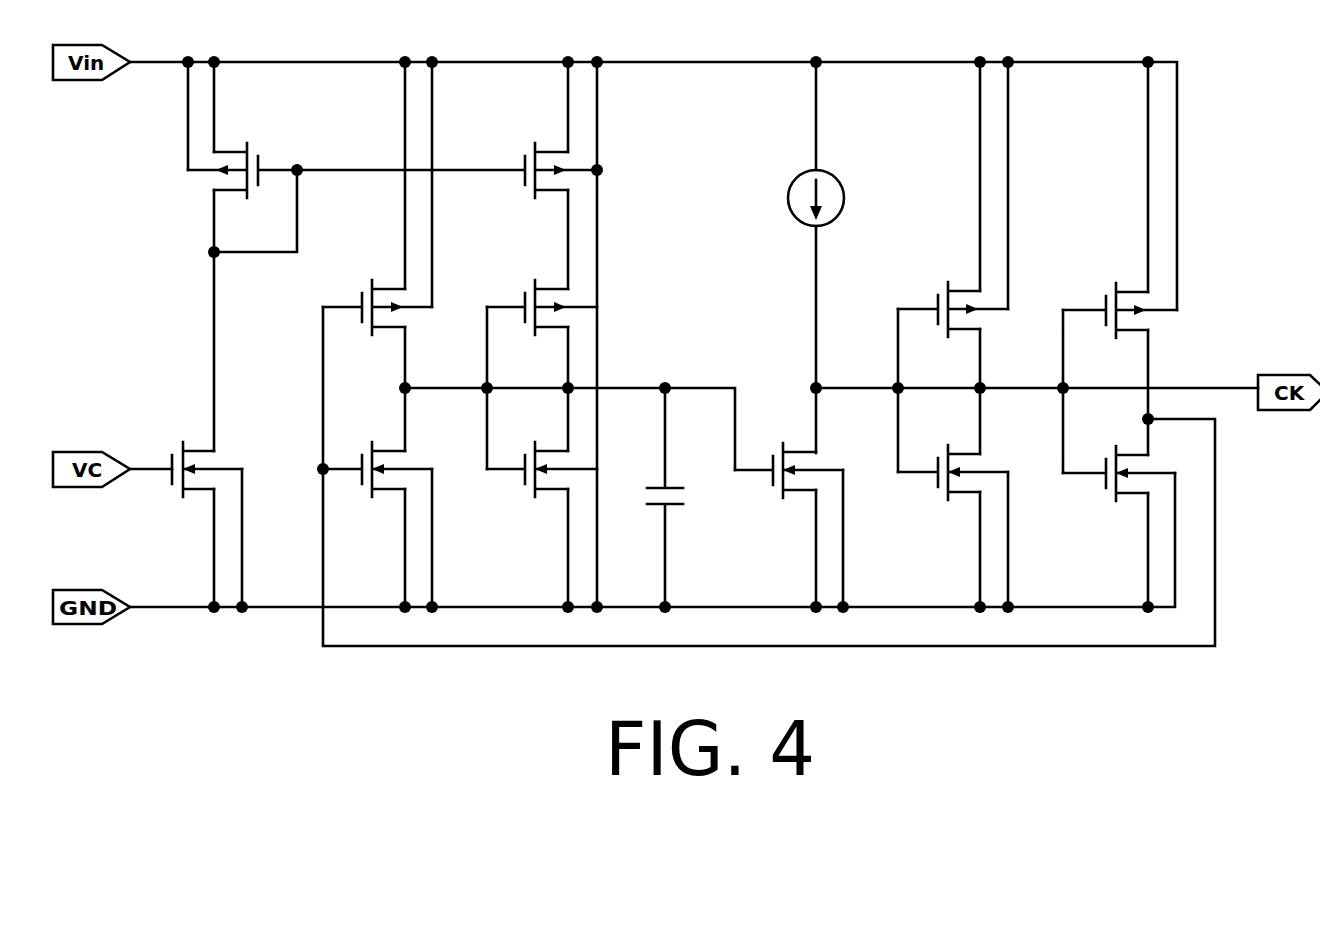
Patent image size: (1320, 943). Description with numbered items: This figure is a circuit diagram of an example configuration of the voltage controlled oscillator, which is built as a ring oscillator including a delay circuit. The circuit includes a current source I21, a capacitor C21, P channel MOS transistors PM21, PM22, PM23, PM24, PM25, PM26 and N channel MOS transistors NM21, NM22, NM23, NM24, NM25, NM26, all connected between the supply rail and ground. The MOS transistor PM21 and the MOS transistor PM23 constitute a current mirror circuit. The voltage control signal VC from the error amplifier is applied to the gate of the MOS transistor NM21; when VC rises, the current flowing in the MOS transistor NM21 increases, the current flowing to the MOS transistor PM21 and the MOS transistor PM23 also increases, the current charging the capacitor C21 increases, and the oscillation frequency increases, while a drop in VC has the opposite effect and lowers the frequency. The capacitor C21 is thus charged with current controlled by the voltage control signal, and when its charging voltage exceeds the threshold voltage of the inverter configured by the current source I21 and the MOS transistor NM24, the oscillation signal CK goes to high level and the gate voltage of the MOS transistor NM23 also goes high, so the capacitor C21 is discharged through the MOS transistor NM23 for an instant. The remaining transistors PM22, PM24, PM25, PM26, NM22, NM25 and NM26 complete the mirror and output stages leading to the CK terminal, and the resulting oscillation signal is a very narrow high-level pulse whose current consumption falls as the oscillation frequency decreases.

The P channel MOS transistor PM21 is at (262, 145).
The P channel MOS transistor PM22 is at (362, 280).
The P channel MOS transistor PM23 is at (530, 145).
The P channel MOS transistor PM24 is at (527, 280).
The P channel MOS transistor PM25 is at (937, 288).
The P channel MOS transistor PM26 is at (1102, 290).
The N channel MOS transistor NM21 is at (173, 442).
The N channel MOS transistor NM22 is at (362, 442).
The N channel MOS transistor NM23 is at (523, 495).
The N channel MOS transistor NM24 is at (773, 493).
The N channel MOS transistor NM25 is at (938, 495).
The N channel MOS transistor NM26 is at (1103, 493).
The capacitor C21 is at (683, 497).
The current source I21 is at (843, 187).